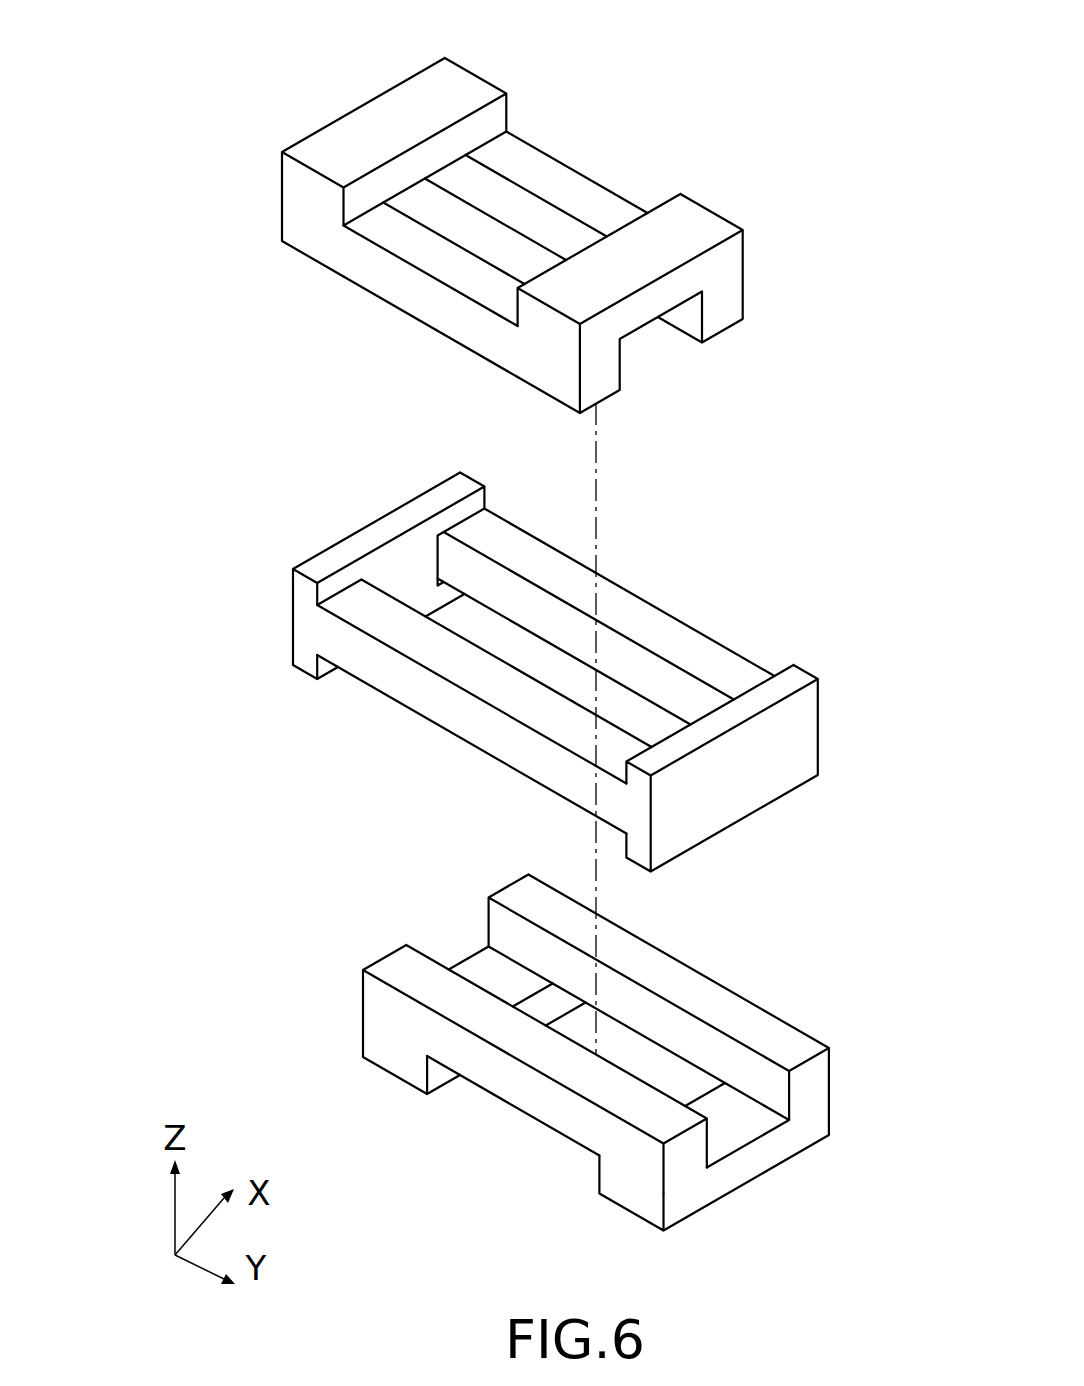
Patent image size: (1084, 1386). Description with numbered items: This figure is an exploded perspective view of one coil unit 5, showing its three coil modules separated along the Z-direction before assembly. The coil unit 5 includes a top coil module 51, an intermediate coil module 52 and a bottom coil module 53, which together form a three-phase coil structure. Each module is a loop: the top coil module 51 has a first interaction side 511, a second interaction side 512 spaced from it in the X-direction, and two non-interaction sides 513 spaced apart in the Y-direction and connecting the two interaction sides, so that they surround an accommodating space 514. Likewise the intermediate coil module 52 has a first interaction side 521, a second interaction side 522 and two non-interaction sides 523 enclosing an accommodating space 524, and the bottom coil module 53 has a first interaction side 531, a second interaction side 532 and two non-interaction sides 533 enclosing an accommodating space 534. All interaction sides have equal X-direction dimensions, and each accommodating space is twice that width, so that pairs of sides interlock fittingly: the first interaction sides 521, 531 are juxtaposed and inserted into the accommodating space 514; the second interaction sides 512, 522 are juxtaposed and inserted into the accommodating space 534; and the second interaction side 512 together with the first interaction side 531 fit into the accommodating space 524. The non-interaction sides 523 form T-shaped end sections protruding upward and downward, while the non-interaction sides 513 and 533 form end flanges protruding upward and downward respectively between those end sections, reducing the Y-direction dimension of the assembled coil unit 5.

The coil unit 5 is at (303, 112).
The top coil module 51 is at (280, 199).
The first interaction side 511 is at (421, 251).
The second interaction side 512 is at (591, 198).
The non-interaction side 513 is at (371, 112).
The accommodating space 514 is at (460, 220).
The intermediate coil module 52 is at (290, 608).
The first interaction side 521 is at (427, 652).
The second interaction side 522 is at (657, 623).
The non-interaction side 523 is at (372, 538).
The accommodating space 524 is at (557, 672).
The bottom coil module 53 is at (362, 1016).
The first interaction side 531 is at (535, 1053).
The second interaction side 532 is at (703, 990).
The non-interaction side 533 is at (482, 965).
The accommodating space 534 is at (457, 947).